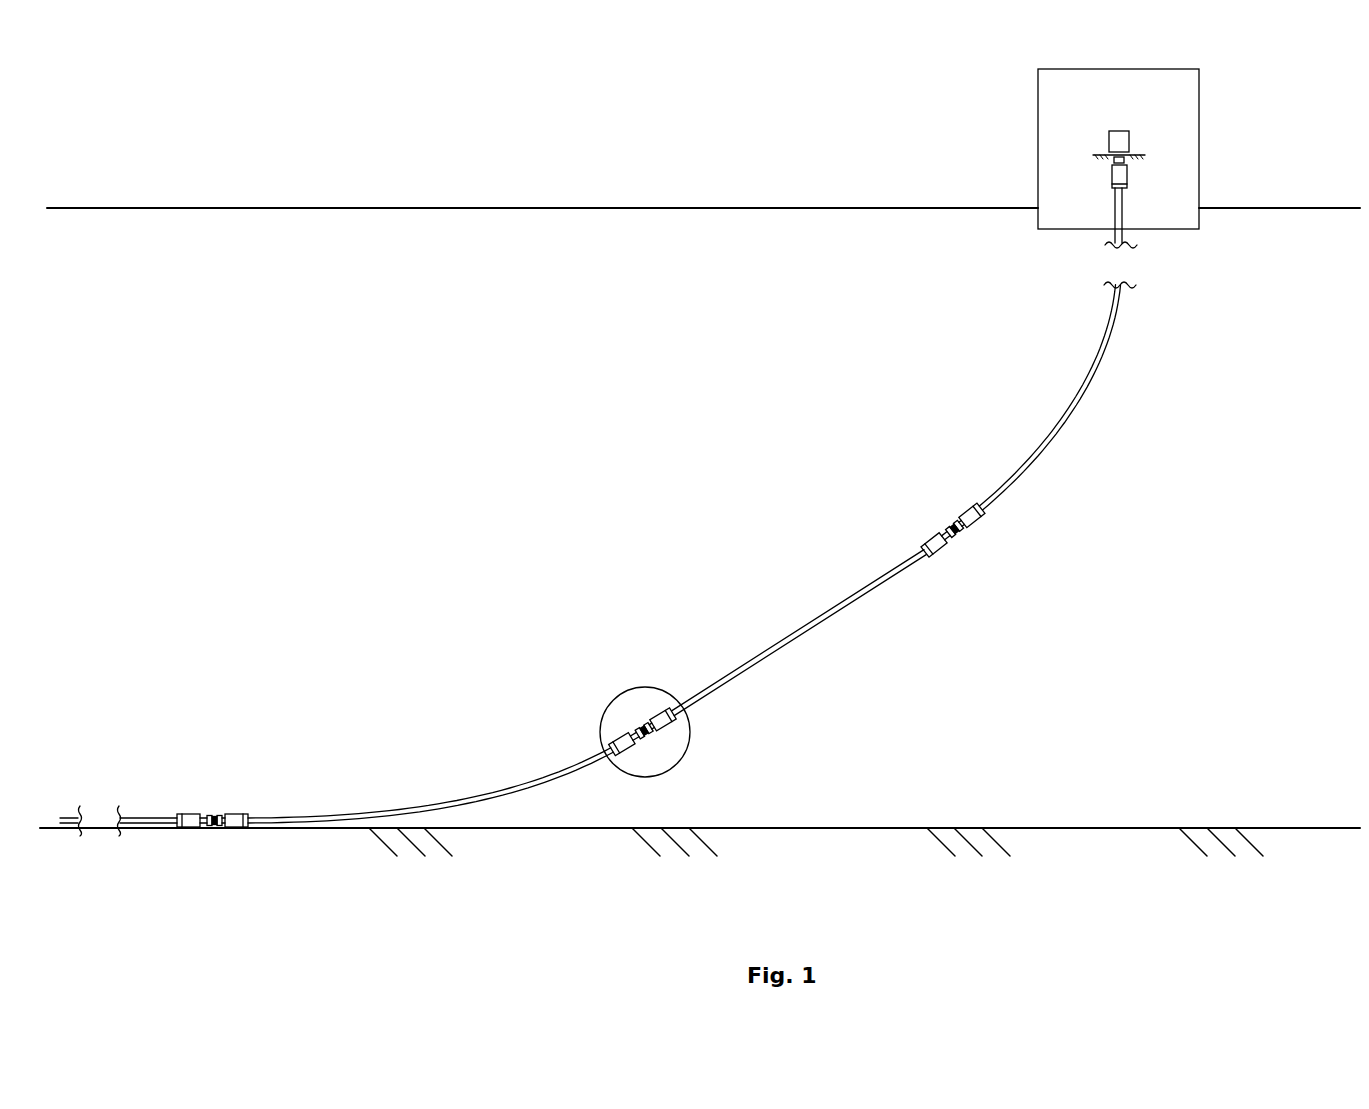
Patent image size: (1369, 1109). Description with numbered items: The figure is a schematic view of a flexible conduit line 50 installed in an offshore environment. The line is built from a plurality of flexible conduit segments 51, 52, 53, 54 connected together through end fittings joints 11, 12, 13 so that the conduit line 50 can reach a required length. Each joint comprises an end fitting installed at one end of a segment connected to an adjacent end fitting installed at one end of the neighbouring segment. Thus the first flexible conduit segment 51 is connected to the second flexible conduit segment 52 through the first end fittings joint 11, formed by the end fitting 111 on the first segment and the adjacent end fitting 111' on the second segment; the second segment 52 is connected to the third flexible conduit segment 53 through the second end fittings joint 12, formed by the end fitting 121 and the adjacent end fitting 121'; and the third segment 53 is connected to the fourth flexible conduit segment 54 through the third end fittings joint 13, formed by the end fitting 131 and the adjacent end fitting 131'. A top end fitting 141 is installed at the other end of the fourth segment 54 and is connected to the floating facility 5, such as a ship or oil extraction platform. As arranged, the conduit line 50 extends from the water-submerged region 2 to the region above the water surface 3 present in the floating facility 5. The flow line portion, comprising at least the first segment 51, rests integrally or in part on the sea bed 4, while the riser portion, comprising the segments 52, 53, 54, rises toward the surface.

The water-submerged region 2 is at (365, 432).
The region above the water surface 3 is at (603, 134).
The sea bed 4 is at (547, 882).
The floating facility 5 is at (1168, 107).
The top end fitting 141 is at (1122, 175).
The flexible conduit line 50 is at (598, 558).
The first flexible conduit segment 51 is at (148, 817).
The second flexible conduit segment 52 is at (440, 805).
The third flexible conduit segment 53 is at (835, 618).
The fourth flexible conduit segment 54 is at (1065, 417).
The first end fittings joint 11 is at (218, 790).
The end fitting 111 is at (175, 871).
The adjacent end fitting 111' is at (254, 869).
The second end fittings joint 12 is at (622, 688).
The end fitting 121 is at (616, 777).
The adjacent end fitting 121' is at (703, 760).
The third end fittings joint 13 is at (938, 500).
The end fitting 131 is at (945, 591).
The adjacent end fitting 131' is at (1007, 554).